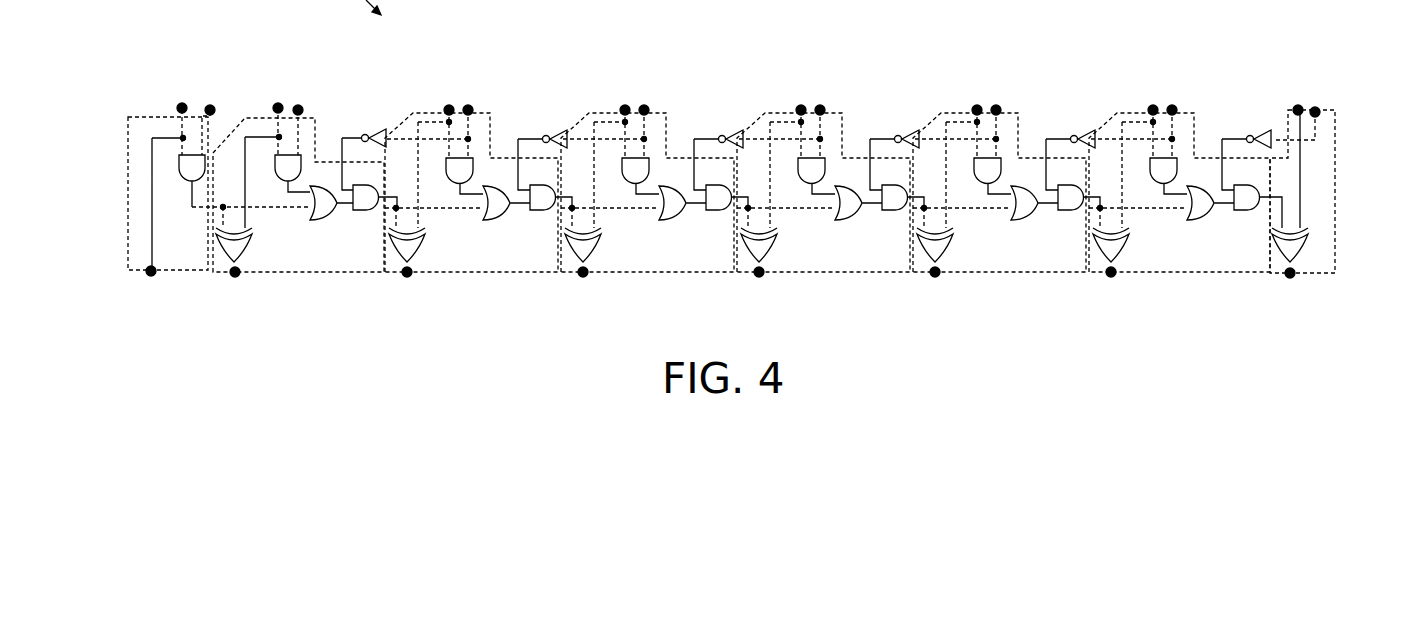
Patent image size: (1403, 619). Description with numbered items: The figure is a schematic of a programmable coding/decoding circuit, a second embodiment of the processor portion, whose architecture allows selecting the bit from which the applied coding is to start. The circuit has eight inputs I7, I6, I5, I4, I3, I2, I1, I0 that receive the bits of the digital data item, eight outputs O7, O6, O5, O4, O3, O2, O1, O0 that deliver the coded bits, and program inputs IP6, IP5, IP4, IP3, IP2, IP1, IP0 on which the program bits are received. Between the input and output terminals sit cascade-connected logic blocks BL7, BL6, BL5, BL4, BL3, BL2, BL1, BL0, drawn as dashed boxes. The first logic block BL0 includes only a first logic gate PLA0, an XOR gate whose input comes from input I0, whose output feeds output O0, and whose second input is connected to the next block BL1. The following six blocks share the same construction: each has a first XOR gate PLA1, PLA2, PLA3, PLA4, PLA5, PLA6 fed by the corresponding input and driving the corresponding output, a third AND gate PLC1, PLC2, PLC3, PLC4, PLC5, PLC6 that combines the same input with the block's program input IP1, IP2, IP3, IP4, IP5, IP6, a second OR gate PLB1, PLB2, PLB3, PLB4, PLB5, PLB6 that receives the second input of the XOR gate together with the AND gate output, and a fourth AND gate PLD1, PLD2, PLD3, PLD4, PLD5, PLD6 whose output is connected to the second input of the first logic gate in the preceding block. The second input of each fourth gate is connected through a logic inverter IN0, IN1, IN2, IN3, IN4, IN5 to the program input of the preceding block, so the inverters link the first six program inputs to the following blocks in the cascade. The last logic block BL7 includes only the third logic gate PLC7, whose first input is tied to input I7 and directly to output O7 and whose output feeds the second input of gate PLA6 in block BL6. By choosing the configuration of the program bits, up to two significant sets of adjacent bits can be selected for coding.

The input I7 is at (180, 108).
The input I6 is at (276, 108).
The input I5 is at (429, 77).
The input I4 is at (605, 77).
The input I3 is at (781, 77).
The input I2 is at (957, 77).
The input I1 is at (1133, 77).
The input I0 is at (1296, 109).
The program input IP6 is at (300, 109).
The program input IP5 is at (492, 82).
The program input IP4 is at (668, 82).
The program input IP3 is at (844, 82).
The program input IP2 is at (1020, 82).
The program input IP1 is at (1196, 82).
The program input IP0 is at (1318, 110).
The output O7 is at (156, 274).
The output O6 is at (240, 275).
The output O5 is at (438, 315).
The output O4 is at (614, 315).
The output O3 is at (790, 315).
The output O2 is at (966, 315).
The output O1 is at (1142, 315).
The output O0 is at (1295, 276).
The last logic block BL7 is at (172, 238).
The logic block BL6 is at (302, 238).
The logic block BL5 is at (478, 219).
The logic block BL4 is at (654, 219).
The logic block BL3 is at (830, 219).
The logic block BL2 is at (1006, 219).
The logic block BL1 is at (1185, 219).
The first logic block BL0 is at (1322, 198).
The third logic gate PLC7 is at (196, 163).
The third logic gate PLC6 is at (282, 163).
The third logic gate PLC5 is at (435, 169).
The third logic gate PLC4 is at (611, 169).
The third logic gate PLC3 is at (787, 169).
The third logic gate PLC2 is at (963, 169).
The third logic gate PLC1 is at (1139, 169).
The second logic gate PLB6 is at (327, 208).
The second logic gate PLB5 is at (510, 224).
The second logic gate PLB4 is at (686, 224).
The second logic gate PLB3 is at (862, 224).
The second logic gate PLB2 is at (1038, 224).
The second logic gate PLB1 is at (1214, 224).
The fourth logic gate PLD6 is at (383, 189).
The fourth logic gate PLD5 is at (539, 174).
The fourth logic gate PLD4 is at (715, 174).
The fourth logic gate PLD3 is at (891, 174).
The fourth logic gate PLD2 is at (1067, 174).
The fourth logic gate PLD1 is at (1246, 183).
The first logic gate PLA6 is at (234, 239).
The first logic gate PLA5 is at (435, 239).
The first logic gate PLA4 is at (611, 239).
The first logic gate PLA3 is at (787, 239).
The first logic gate PLA2 is at (963, 239).
The first logic gate PLA1 is at (1139, 239).
The first logic gate PLA0 is at (1288, 240).
The logic inverter IN5 is at (373, 137).
The logic inverter IN4 is at (541, 122).
The logic inverter IN3 is at (717, 122).
The logic inverter IN2 is at (893, 122).
The logic inverter IN1 is at (1069, 122).
The logic inverter IN0 is at (1245, 122).